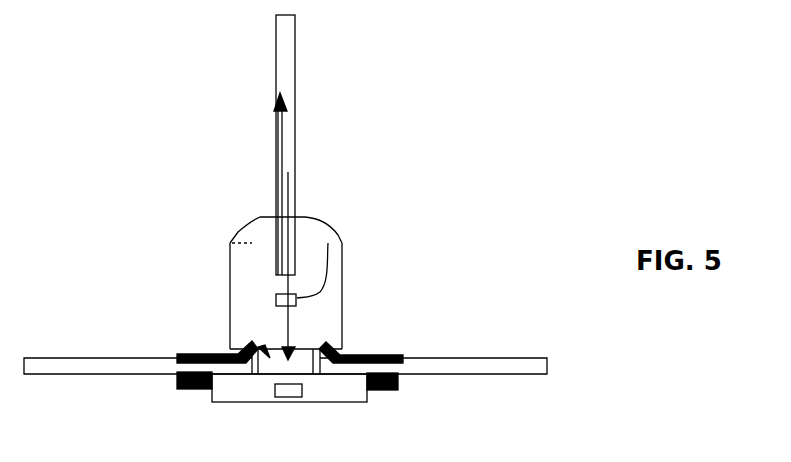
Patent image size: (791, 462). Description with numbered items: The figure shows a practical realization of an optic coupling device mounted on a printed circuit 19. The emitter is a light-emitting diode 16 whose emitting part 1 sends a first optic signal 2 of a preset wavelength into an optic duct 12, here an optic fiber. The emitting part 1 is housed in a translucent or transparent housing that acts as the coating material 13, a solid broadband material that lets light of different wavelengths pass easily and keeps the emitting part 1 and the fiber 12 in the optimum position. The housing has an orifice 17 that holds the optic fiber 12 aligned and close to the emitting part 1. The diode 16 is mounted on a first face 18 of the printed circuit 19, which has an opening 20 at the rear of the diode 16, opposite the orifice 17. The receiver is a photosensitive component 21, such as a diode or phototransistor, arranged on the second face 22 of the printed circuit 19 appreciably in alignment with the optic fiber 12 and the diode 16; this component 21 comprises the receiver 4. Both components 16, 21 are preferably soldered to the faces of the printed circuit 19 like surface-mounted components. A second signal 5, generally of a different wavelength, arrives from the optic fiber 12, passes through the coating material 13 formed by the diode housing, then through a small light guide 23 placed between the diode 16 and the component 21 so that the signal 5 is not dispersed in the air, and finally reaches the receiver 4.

The emitter 1 is at (338, 247).
The first optic signal 2 is at (276, 85).
The receiver 4 is at (295, 390).
The second signal 5 is at (293, 320).
The optic duct 12 is at (288, 121).
The coating material 13 is at (300, 299).
The light-emitting diode 16 is at (230, 271).
The orifice 17 is at (302, 237).
The first face 18 is at (433, 352).
The printed circuit 19 is at (508, 366).
The opening 20 is at (258, 347).
The photosensitive component 21 is at (230, 392).
The second face 22 is at (477, 395).
The light guide 23 is at (302, 362).